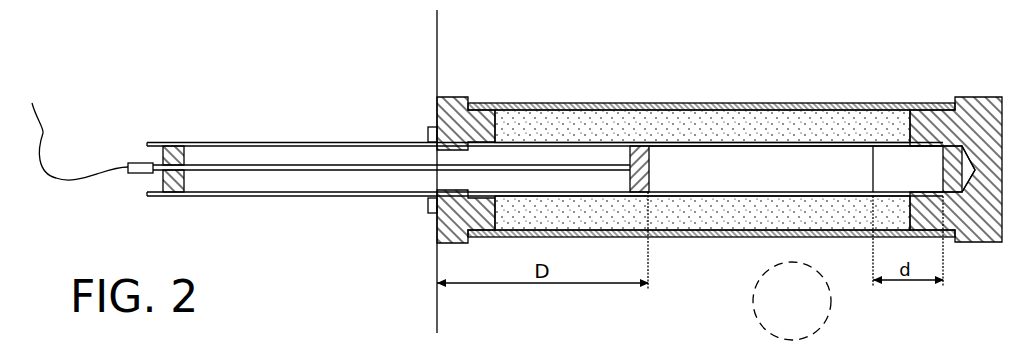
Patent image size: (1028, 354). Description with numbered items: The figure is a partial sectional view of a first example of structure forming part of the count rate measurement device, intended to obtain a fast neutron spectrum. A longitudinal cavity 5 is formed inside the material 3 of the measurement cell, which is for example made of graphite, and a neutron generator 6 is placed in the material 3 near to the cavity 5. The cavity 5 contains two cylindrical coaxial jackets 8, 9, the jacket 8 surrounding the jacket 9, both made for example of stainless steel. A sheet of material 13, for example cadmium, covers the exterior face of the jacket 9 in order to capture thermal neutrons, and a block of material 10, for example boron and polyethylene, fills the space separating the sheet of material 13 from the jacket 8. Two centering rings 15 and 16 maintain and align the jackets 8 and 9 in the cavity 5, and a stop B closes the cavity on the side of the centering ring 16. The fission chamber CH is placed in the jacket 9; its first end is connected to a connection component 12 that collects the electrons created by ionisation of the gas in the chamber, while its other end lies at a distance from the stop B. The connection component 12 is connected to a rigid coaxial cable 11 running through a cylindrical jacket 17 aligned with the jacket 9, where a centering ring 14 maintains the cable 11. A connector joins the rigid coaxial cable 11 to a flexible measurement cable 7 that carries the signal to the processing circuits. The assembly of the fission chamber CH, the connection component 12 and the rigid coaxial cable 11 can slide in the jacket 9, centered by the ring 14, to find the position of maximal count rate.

The material 3 is at (450, 322).
The longitudinal cavity 5 is at (680, 125).
The neutron generator 6 is at (767, 312).
The flexible measurement cable 7 is at (80, 180).
The cylindrical jacket 8 is at (782, 102).
The cylindrical jacket 9 is at (835, 145).
The block of material 10 is at (547, 122).
The rigid coaxial cable 11 is at (350, 172).
The connection component 12 is at (637, 146).
The sheet of material 13 is at (717, 142).
The centering ring 14 is at (178, 143).
The centering ring 15 is at (450, 115).
The centering ring 16 is at (975, 118).
The cylindrical jacket 17 is at (248, 196).
The stop B is at (958, 243).
The fission chamber CH is at (722, 178).